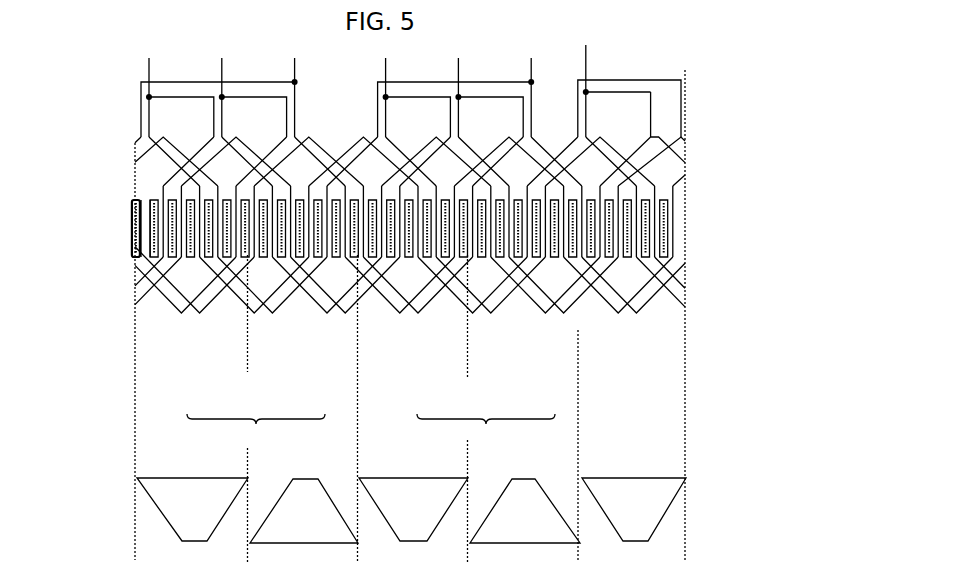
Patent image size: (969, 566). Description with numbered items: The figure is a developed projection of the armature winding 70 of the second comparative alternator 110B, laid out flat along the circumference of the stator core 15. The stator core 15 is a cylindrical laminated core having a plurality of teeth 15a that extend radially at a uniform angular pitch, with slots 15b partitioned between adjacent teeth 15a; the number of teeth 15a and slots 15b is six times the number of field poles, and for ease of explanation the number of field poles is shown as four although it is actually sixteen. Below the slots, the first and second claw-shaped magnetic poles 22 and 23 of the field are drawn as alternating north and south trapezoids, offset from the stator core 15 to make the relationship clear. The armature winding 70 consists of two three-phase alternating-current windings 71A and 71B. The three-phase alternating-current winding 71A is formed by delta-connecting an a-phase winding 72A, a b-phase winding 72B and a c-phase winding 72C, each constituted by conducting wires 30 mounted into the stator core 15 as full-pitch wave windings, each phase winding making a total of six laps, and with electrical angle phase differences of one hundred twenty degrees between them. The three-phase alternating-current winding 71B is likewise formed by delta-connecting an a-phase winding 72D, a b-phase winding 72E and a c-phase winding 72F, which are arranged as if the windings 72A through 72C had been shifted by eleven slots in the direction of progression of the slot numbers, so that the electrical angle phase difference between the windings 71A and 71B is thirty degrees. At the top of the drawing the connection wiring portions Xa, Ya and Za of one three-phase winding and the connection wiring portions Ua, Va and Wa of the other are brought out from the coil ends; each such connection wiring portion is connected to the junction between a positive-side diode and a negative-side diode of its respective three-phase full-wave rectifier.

The second comparative alternator 110B is at (102, 71).
The stator core 15 is at (133, 239).
The teeth 15a is at (133, 217).
The slots 15b is at (145, 217).
The conducting wires 30 is at (346, 148).
The armature winding 70 is at (162, 303).
The a-phase winding 72A is at (210, 312).
The b-phase winding 72B is at (263, 312).
The c-phase winding 72C is at (317, 315).
The a-phase winding 72D is at (430, 288).
The b-phase winding 72E is at (468, 316).
The c-phase winding 72F is at (527, 308).
The three-phase alternating-current winding 71A is at (256, 431).
The three-phase alternating-current winding 71B is at (486, 431).
The first claw-shaped magnetic pole 22 is at (178, 530).
The second claw-shaped magnetic pole 23 is at (272, 537).
The connection wiring portion Wa is at (149, 97).
The connection wiring portion Va is at (222, 97).
The connection wiring portion Ua is at (295, 82).
The connection wiring portion Za is at (386, 97).
The connection wiring portion Ya is at (458, 97).
The connection wiring portion Xa is at (531, 82).